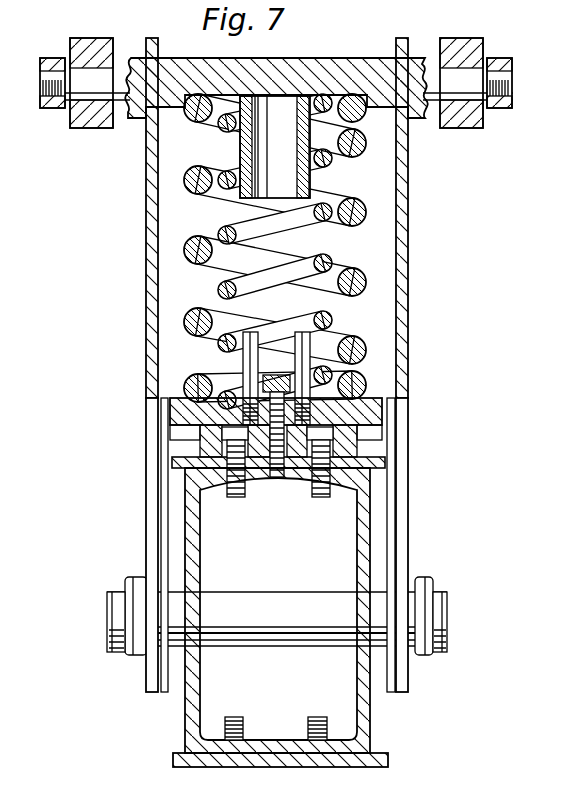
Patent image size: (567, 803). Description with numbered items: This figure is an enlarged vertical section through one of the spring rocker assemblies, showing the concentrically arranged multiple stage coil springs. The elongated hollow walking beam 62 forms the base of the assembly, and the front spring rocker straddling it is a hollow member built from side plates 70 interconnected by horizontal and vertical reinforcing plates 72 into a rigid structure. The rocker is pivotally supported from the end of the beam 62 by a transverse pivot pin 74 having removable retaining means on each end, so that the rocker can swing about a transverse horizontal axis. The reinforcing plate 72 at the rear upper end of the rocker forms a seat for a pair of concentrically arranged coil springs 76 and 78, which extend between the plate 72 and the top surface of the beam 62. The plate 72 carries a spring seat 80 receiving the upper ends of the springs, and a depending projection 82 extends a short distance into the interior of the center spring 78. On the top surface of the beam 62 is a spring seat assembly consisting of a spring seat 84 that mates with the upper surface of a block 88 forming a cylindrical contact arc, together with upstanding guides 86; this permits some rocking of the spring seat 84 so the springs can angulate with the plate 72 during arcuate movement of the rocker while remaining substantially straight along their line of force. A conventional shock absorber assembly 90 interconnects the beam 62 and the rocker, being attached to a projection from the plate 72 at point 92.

The walking beam 62 is at (368, 702).
The side plates 70 is at (147, 172).
The reinforcing plate 72 is at (286, 72).
The transverse pivot pin 74 is at (243, 606).
The coil spring 76 is at (362, 210).
The center spring 78 is at (329, 261).
The spring seat 80 is at (356, 118).
The depending projection 82 is at (246, 192).
The spring seat 84 is at (384, 410).
The upstanding guides 86 is at (305, 350).
The block 88 is at (345, 446).
The shock absorber assembly 90 is at (88, 129).
The point of attachment 92 is at (64, 108).